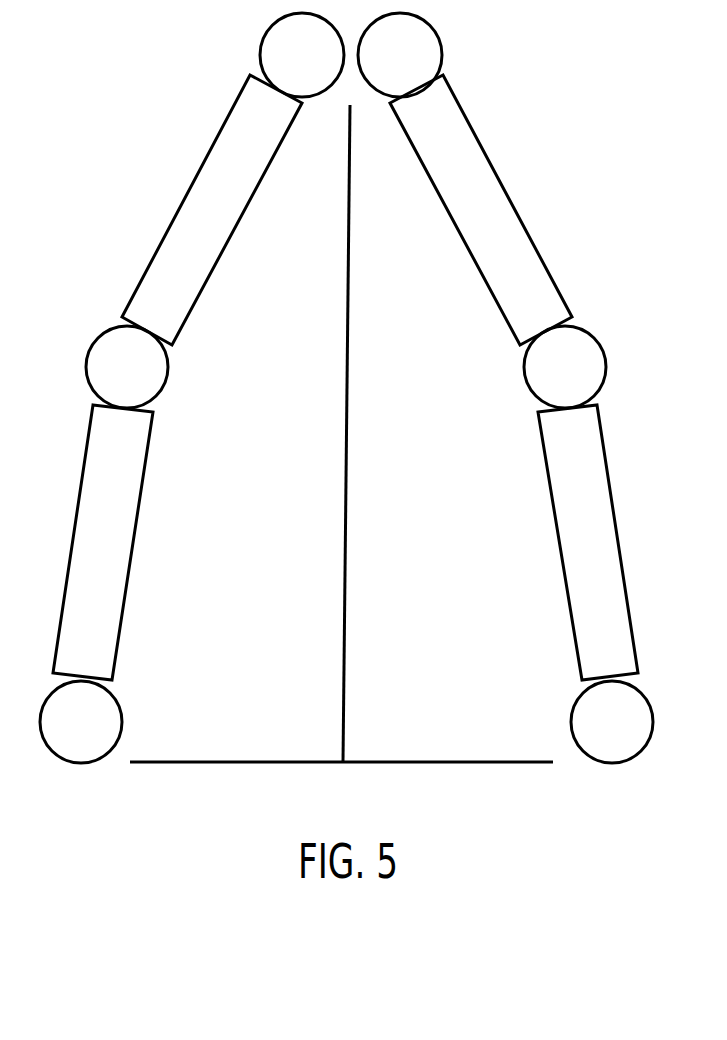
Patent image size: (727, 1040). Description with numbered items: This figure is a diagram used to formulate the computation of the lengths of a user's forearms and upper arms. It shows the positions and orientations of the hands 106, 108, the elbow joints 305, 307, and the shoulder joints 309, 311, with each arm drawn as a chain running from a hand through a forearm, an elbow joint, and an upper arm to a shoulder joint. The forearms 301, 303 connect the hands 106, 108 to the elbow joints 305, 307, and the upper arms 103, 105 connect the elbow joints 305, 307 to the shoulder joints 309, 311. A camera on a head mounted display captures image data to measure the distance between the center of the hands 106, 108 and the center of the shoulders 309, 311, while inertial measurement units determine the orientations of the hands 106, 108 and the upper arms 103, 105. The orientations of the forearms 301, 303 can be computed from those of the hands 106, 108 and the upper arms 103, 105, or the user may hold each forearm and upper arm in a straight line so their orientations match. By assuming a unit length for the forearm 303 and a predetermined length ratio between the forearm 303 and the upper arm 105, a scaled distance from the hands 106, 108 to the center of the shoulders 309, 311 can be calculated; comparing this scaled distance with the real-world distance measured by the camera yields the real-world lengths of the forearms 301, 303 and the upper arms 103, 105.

The hand 108 is at (280, 70).
The hand 106 is at (378, 70).
The forearm 301 is at (212, 210).
The forearm 303 is at (481, 210).
The elbow joint 305 is at (105, 382).
The elbow joint 307 is at (543, 382).
The upper arm 103 is at (103, 542).
The upper arm 105 is at (588, 542).
The shoulder joint 309 is at (59, 737).
The shoulder joint 311 is at (590, 737).